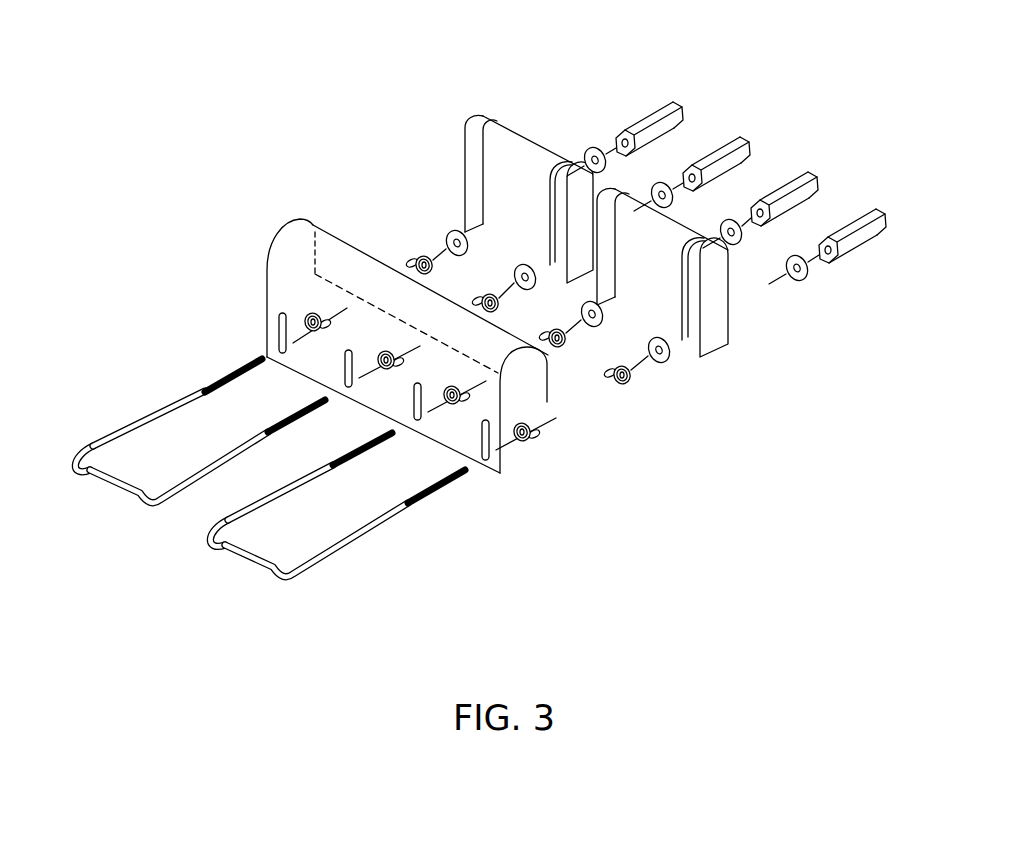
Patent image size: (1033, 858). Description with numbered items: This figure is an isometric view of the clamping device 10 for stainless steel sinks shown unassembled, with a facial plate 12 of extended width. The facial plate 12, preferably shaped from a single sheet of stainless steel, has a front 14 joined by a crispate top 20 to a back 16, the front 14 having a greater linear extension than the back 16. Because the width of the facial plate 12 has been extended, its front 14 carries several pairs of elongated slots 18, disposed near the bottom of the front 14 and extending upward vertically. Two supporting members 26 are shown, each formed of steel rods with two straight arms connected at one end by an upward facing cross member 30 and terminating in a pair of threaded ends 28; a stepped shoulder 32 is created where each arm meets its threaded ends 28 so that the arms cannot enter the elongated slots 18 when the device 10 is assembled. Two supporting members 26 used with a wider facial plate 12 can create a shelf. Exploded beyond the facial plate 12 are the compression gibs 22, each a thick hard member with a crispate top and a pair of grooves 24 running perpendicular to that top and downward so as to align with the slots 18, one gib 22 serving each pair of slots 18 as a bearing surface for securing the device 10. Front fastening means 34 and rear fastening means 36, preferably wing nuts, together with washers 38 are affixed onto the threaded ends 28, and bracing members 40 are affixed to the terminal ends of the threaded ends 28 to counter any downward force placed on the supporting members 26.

The clamping device 10 is at (357, 327).
The facial plate 12 is at (287, 250).
The front 14 is at (422, 448).
The back 16 is at (502, 332).
The elongated slots 18 is at (290, 340).
The crispate top 20 is at (368, 268).
The compression gib 22 is at (686, 234).
The grooves 24 is at (485, 223).
The supporting member 26 is at (258, 491).
The threaded ends 28 is at (222, 380).
The cross member 30 is at (113, 468).
The stepped shoulder 32 is at (200, 393).
The front fastening means 34 is at (380, 352).
The rear fastening means 36 is at (478, 298).
The washers 38 is at (451, 232).
The bracing members 40 is at (652, 115).